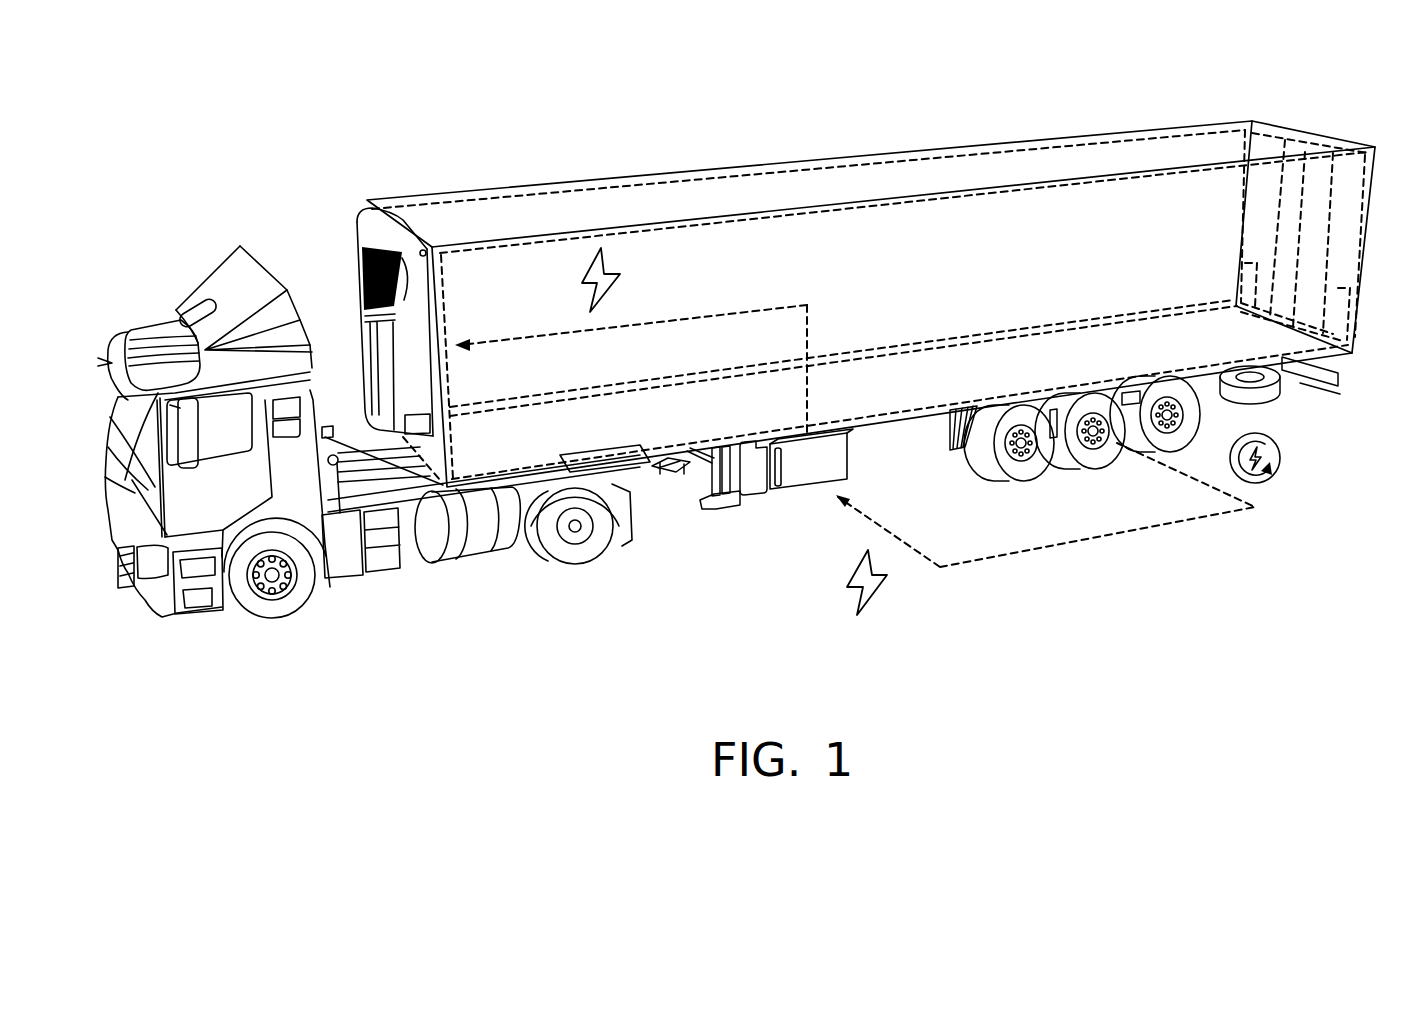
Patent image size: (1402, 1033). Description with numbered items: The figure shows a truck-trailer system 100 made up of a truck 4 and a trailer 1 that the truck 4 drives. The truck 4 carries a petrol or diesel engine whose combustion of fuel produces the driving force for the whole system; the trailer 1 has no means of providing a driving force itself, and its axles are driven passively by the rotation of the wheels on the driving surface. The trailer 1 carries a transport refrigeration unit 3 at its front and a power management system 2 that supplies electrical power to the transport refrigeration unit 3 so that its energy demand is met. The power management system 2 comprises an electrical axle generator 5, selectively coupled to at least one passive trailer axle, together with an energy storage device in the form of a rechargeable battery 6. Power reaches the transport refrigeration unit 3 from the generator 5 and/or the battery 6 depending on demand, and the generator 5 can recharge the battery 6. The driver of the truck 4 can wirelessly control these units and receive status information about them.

The truck-trailer system 100 is at (272, 698).
The trailer 1 is at (665, 483).
The power management system 2 is at (942, 583).
The transport refrigeration unit (TRU) 3 is at (357, 245).
The truck 4 is at (194, 350).
The electrical axle generator 5 is at (1112, 434).
The rechargeable battery 6 is at (824, 433).